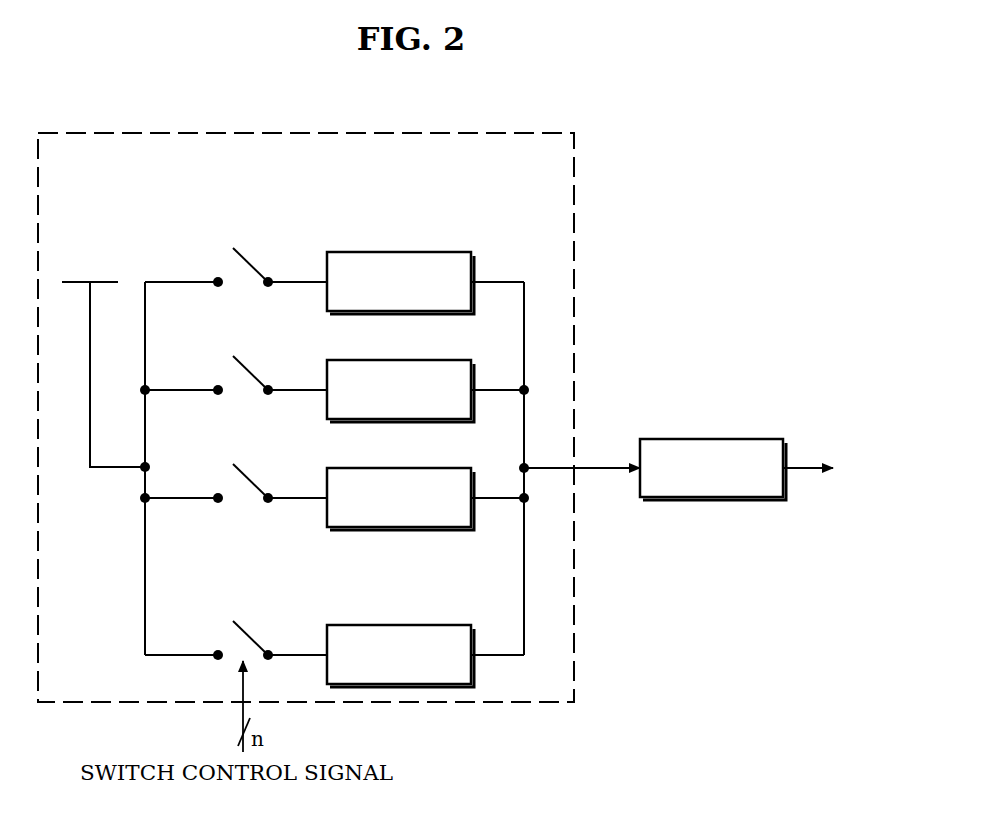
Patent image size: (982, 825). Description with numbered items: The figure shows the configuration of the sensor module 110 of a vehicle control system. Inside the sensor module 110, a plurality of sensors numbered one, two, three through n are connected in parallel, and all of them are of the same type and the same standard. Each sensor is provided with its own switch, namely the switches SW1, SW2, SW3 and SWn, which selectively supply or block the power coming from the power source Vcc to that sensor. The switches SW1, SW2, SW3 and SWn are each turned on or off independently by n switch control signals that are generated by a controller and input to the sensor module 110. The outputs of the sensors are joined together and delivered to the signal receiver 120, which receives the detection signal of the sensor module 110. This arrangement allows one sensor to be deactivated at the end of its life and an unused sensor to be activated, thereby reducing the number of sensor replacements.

The sensor module 110 is at (306, 417).
The signal receiver 120 is at (752, 439).
The switch SW1 is at (220, 267).
The switch SW2 is at (220, 375).
The switch SW3 is at (220, 483).
The switch SWn is at (220, 640).
The power source Vcc is at (103, 360).